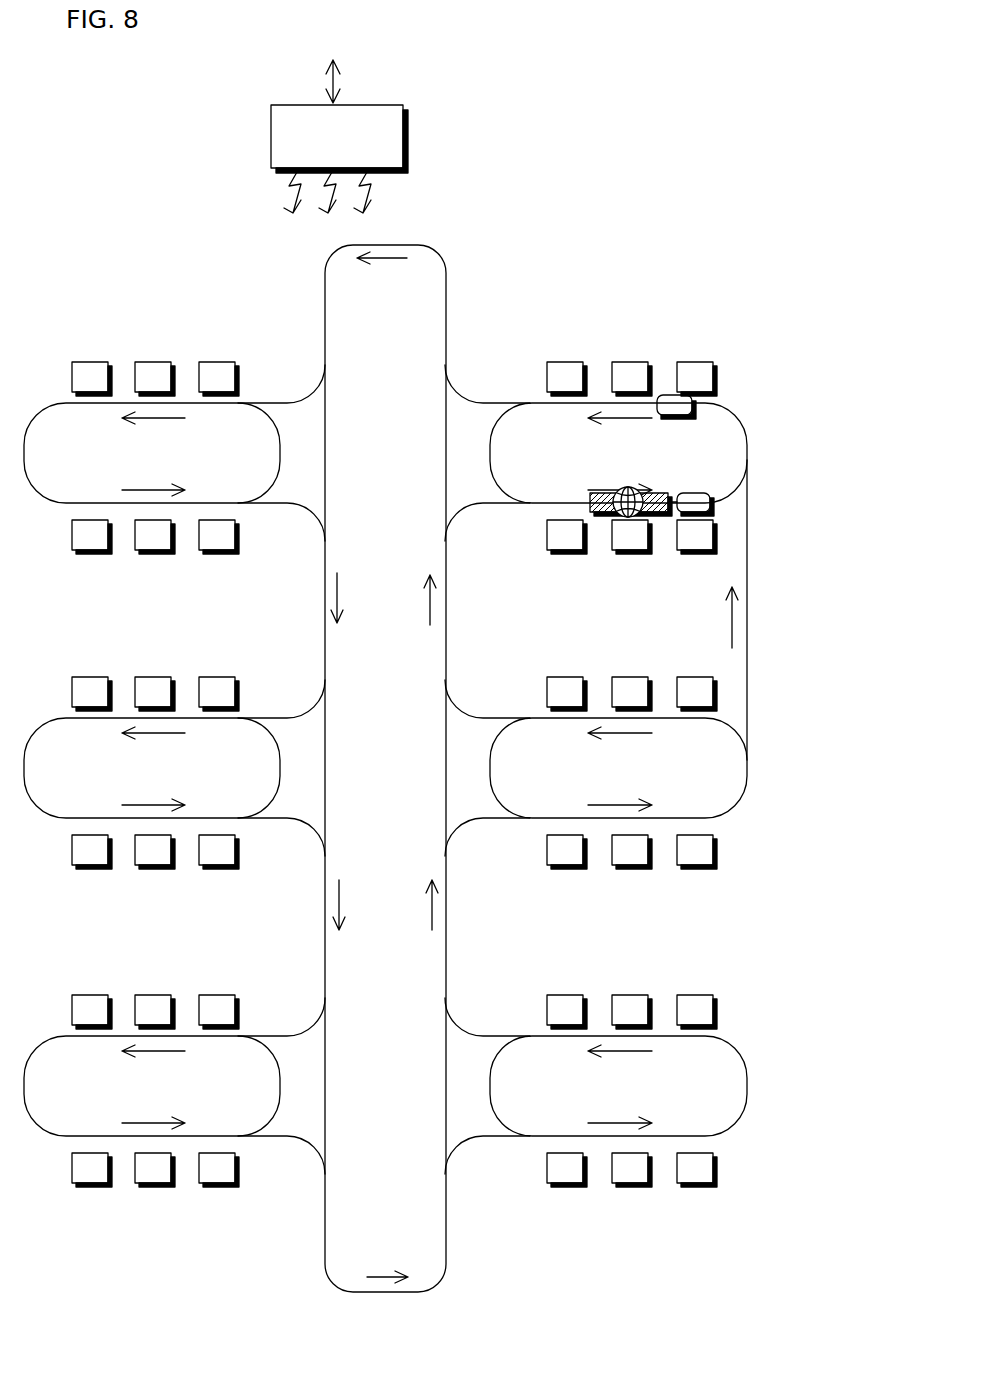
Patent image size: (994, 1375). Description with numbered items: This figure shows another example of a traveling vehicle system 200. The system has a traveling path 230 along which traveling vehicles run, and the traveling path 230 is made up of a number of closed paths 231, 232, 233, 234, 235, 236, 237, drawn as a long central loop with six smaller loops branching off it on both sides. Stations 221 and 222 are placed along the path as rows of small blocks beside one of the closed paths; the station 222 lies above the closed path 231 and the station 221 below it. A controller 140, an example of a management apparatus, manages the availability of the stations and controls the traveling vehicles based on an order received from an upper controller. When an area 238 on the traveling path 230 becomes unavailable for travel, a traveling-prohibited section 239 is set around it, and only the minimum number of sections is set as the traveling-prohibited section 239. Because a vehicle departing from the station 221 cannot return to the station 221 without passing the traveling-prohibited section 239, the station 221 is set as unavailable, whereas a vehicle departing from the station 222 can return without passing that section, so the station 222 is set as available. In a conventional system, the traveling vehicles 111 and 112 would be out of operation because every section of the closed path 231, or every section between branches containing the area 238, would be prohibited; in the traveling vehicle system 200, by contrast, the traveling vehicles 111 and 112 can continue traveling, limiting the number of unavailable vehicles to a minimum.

The controller 140 is at (403, 118).
The traveling vehicle system 200 is at (158, 212).
The traveling path 230 is at (466, 242).
The closed path 237 is at (327, 328).
The closed path 231 is at (491, 451).
The closed path 232 is at (491, 766).
The closed path 233 is at (491, 1084).
The closed path 234 is at (280, 450).
The closed path 235 is at (280, 765).
The closed path 236 is at (280, 1083).
The station 222 is at (690, 361).
The station 221 is at (690, 553).
The traveling vehicle 111 is at (692, 403).
The traveling vehicle 112 is at (710, 500).
The area 238 is at (630, 487).
The traveling-prohibited section 239 is at (658, 496).